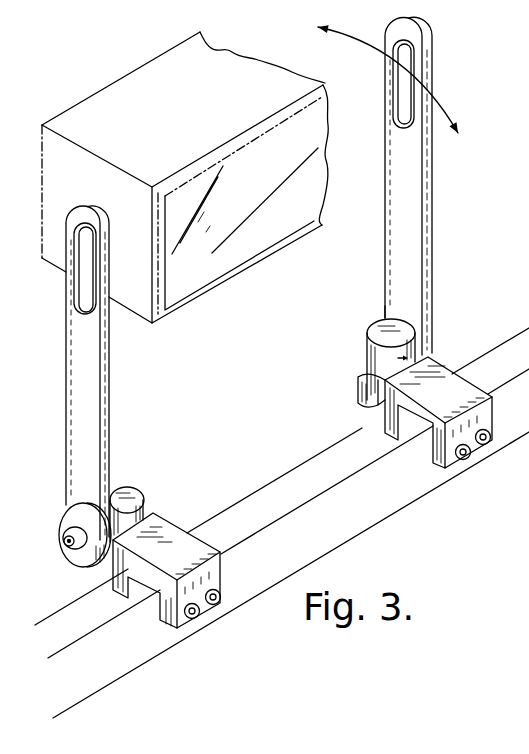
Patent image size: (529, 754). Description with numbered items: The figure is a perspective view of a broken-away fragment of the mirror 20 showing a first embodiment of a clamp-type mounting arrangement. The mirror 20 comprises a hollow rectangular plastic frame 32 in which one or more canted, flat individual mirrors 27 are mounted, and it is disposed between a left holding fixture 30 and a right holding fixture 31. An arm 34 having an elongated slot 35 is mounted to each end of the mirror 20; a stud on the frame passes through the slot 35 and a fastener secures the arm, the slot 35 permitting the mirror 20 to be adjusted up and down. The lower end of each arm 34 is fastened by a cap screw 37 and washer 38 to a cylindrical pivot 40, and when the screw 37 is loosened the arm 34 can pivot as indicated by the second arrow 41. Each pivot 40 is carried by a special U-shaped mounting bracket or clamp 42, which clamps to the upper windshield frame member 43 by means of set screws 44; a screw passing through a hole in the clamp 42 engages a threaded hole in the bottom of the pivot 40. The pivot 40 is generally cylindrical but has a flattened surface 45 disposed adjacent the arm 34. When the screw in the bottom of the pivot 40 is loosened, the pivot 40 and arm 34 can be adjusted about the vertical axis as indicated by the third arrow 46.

The mirror 20 is at (137, 75).
The hollow rectangular plastic frame 32 is at (160, 144).
The canted, flat individual mirrors 27 is at (176, 272).
The left holding fixture 30 is at (182, 480).
The right holding fixture 31 is at (351, 303).
The arm 34 is at (70, 392).
The elongated slot 35 is at (77, 296).
The cap screw 37 is at (75, 564).
The washer 38 is at (68, 505).
The cylindrical pivot 40 is at (122, 487).
The second arrow 41 is at (440, 112).
The U-shaped mounting bracket or clamp 42 is at (168, 520).
The upper windshield frame member 43 is at (282, 523).
The set screws 44 is at (193, 614).
The flattened surface 45 is at (388, 301).
The third arrow 46 is at (363, 312).